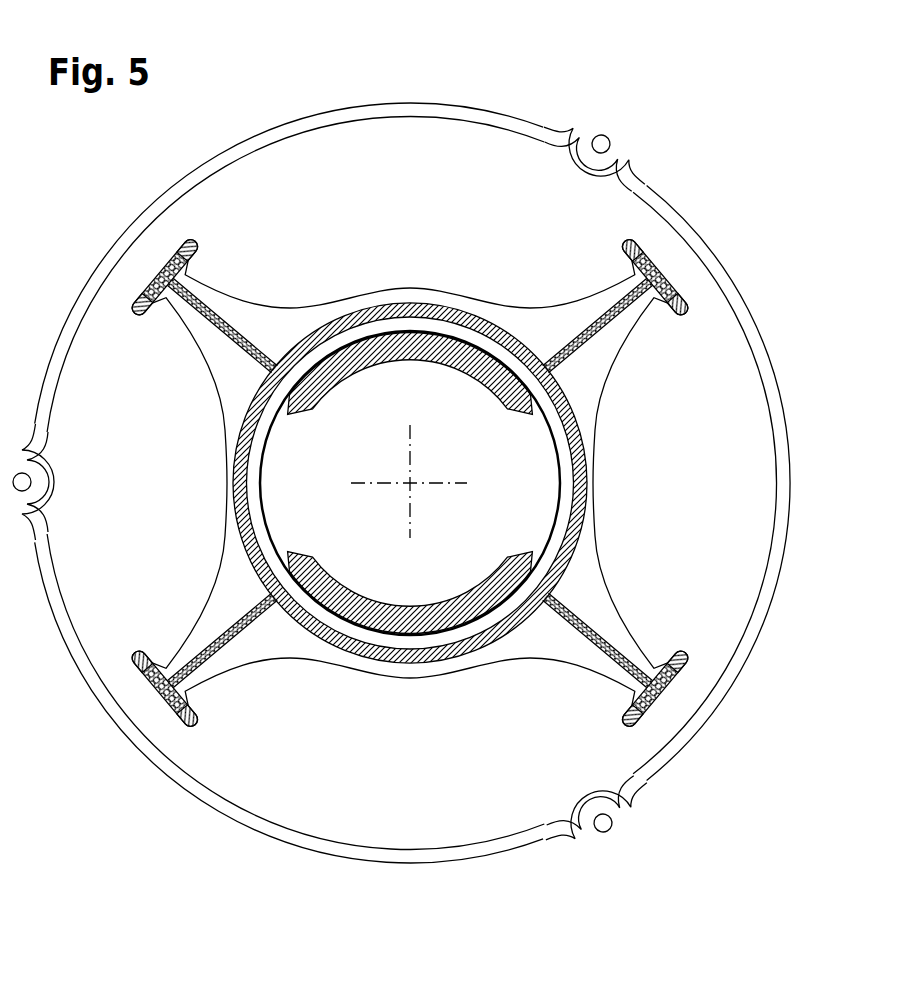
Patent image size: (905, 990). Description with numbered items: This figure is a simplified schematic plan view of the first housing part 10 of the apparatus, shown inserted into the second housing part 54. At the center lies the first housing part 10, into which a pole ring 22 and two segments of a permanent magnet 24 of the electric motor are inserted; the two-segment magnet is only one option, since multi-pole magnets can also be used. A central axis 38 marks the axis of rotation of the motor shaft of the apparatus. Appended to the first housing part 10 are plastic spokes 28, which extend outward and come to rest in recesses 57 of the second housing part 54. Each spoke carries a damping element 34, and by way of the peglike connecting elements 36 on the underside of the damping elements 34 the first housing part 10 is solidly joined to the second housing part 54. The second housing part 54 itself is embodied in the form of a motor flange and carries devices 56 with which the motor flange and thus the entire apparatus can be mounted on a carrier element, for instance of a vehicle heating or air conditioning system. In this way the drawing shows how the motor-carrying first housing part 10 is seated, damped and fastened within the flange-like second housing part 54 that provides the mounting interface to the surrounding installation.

The first housing part 10 is at (586, 460).
The pole ring 22 is at (560, 477).
The permanent magnet 24 is at (403, 360).
The plastic spokes 28 is at (223, 632).
The damping elements 34 is at (648, 252).
The peglike connecting elements 36 is at (689, 303).
The central axis 38 is at (403, 490).
The second housing part 54 is at (573, 218).
The devices 56 is at (601, 132).
The recesses 57 is at (220, 348).